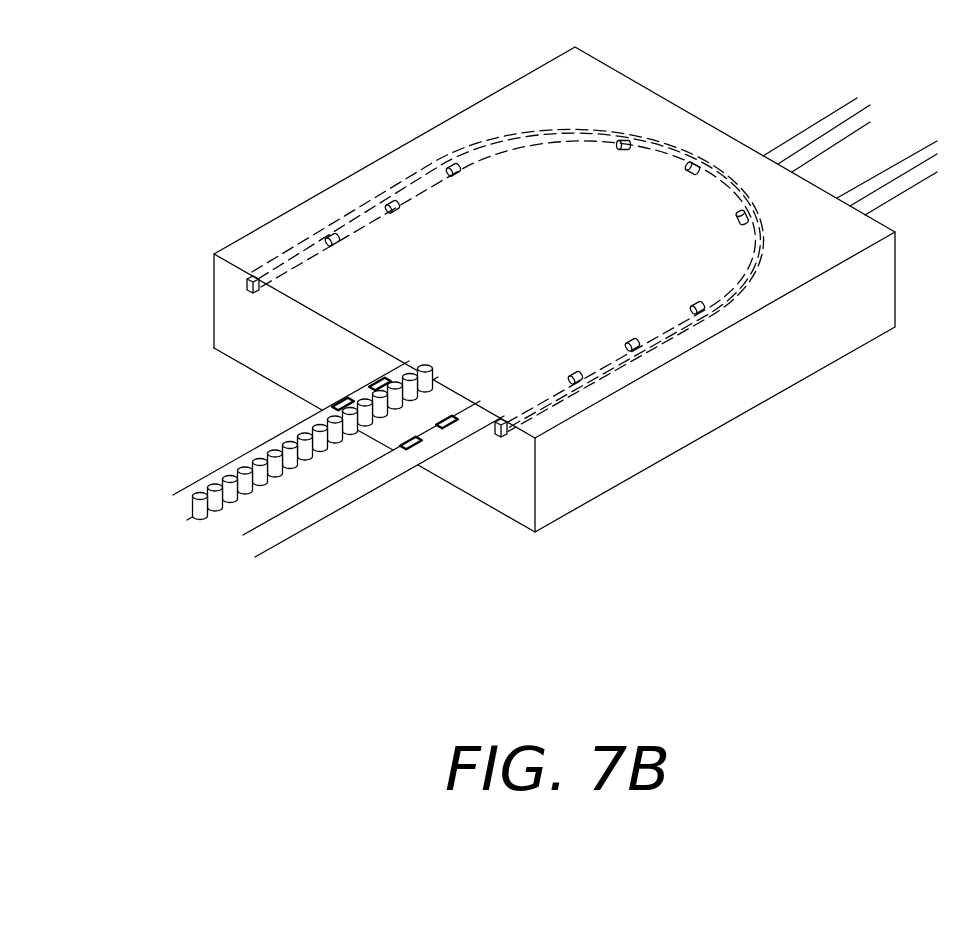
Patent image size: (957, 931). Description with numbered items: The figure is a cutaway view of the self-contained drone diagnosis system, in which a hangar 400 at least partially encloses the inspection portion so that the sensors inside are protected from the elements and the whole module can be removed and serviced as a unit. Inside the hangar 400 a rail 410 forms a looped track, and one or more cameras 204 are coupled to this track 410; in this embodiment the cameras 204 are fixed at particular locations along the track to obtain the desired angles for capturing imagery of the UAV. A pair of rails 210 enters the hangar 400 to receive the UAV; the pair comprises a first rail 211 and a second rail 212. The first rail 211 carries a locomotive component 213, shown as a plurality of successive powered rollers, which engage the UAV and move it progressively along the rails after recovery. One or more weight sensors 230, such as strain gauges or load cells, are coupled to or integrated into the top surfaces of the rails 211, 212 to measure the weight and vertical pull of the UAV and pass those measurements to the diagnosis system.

The hangar 400 is at (704, 94).
The rail 410 is at (247, 283).
The cameras 204 is at (446, 164).
The pair of rails 210 is at (271, 501).
The first rail 211 is at (167, 511).
The second rail 212 is at (237, 556).
The locomotive component 213 is at (252, 473).
The weight sensors 230 is at (412, 447).